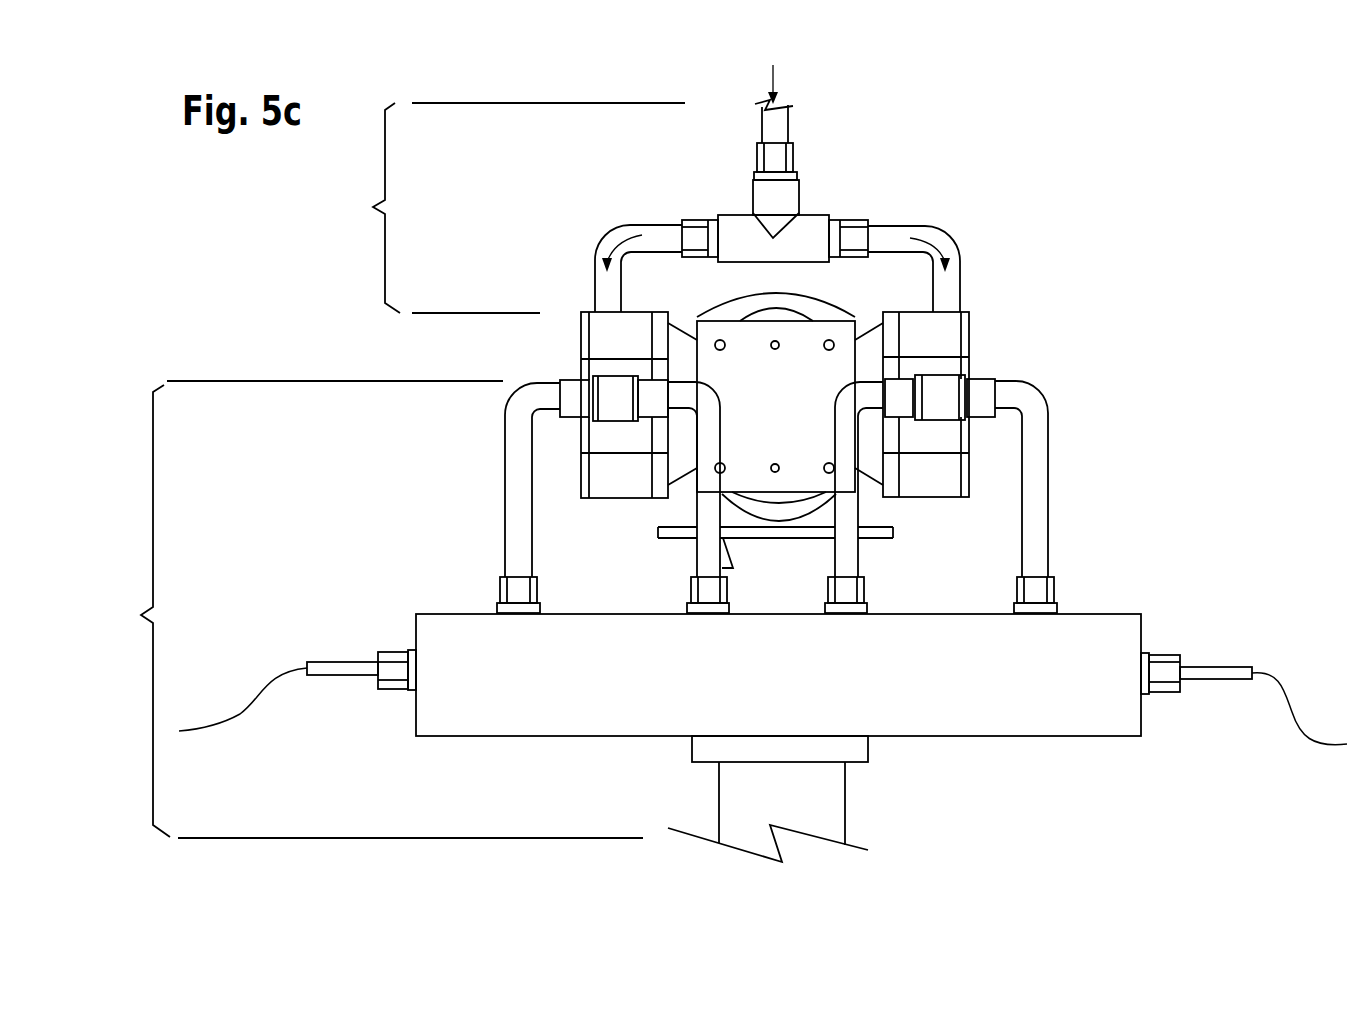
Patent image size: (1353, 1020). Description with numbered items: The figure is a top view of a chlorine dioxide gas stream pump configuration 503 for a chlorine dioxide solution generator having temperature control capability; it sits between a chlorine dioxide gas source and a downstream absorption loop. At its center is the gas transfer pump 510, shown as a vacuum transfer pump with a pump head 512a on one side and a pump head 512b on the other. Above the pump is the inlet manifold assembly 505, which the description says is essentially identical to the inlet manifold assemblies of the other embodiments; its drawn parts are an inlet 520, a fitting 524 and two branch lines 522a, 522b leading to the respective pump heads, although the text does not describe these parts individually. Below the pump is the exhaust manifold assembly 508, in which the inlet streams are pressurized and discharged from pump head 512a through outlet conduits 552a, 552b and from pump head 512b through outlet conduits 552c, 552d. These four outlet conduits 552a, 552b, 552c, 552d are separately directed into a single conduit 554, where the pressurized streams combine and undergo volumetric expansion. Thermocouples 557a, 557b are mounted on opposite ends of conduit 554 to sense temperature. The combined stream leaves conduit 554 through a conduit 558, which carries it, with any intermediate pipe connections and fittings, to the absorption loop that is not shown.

The gas stream pump configuration 503 is at (1046, 180).
The inlet manifold assembly 505 is at (508, 208).
The exhaust manifold assembly 508 is at (370, 609).
The gas transfer pump 510 is at (857, 335).
The pump head 512a is at (592, 327).
The pump head 512b is at (952, 333).
The inlet line 520 is at (790, 120).
The inlet branch tube 522a is at (608, 232).
The inlet branch tube 522b is at (913, 227).
The tee fitting 524 is at (760, 203).
The outlet conduit 552a is at (517, 402).
The outlet conduit 552b is at (703, 505).
The outlet conduit 552c is at (852, 517).
The outlet conduit 552d is at (1032, 397).
The single conduit 554 is at (1022, 708).
The thermocouple 557a is at (390, 677).
The thermocouple 557b is at (1167, 680).
The conduit 558 is at (733, 790).